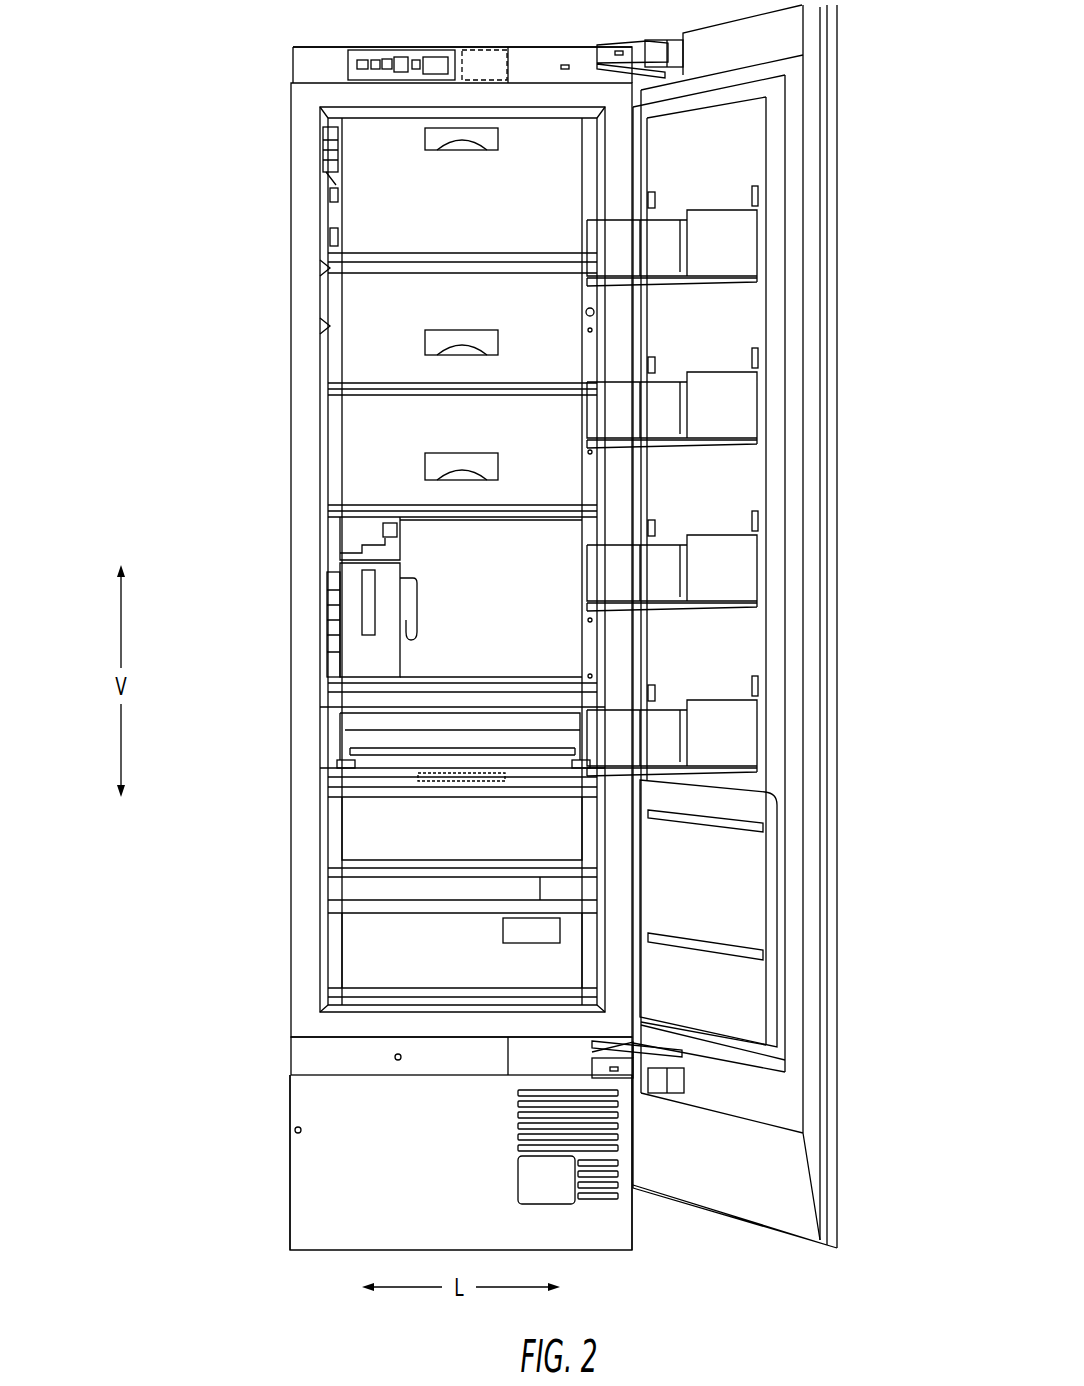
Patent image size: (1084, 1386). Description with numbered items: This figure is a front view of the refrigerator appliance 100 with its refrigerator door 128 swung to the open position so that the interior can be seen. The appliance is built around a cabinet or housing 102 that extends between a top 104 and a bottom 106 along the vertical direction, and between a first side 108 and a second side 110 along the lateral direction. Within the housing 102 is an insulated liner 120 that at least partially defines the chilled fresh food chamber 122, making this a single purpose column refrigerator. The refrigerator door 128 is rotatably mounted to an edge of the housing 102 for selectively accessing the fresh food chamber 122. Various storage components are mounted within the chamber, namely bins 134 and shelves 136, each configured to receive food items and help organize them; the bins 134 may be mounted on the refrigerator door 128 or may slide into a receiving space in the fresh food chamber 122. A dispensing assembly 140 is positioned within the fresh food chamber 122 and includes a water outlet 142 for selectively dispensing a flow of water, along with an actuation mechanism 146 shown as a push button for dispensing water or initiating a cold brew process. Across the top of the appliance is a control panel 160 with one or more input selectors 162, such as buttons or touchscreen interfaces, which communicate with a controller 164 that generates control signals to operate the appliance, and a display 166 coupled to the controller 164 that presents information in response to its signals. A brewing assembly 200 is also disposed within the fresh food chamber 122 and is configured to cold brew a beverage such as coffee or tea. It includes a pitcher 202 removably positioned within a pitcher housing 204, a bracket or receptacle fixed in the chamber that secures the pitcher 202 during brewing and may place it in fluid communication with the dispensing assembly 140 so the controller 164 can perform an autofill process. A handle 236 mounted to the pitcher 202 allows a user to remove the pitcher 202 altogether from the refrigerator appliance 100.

The refrigerator appliance 100 is at (133, 195).
The housing 102 is at (454, 622).
The top 104 is at (419, 81).
The bottom 106 is at (423, 1162).
The first side 108 is at (307, 1191).
The second side 110 is at (611, 1194).
The insulated liner 120 is at (415, 559).
The fresh food chamber 122 is at (417, 713).
The refrigerator door 128 is at (763, 626).
The bins 134 is at (565, 587).
The shelves 136 is at (409, 583).
The dispensing assembly 140 is at (312, 532).
The water outlet 142 is at (393, 550).
The actuation mechanism 146 is at (405, 470).
The control panel 160 is at (398, 40).
The input selectors 162 is at (403, 36).
The controller 164 is at (507, 43).
The display 166 is at (457, 41).
The brewing assembly 200 is at (299, 623).
The pitcher 202 is at (313, 620).
The pitcher housing 204 is at (491, 599).
The handle 236 is at (439, 608).